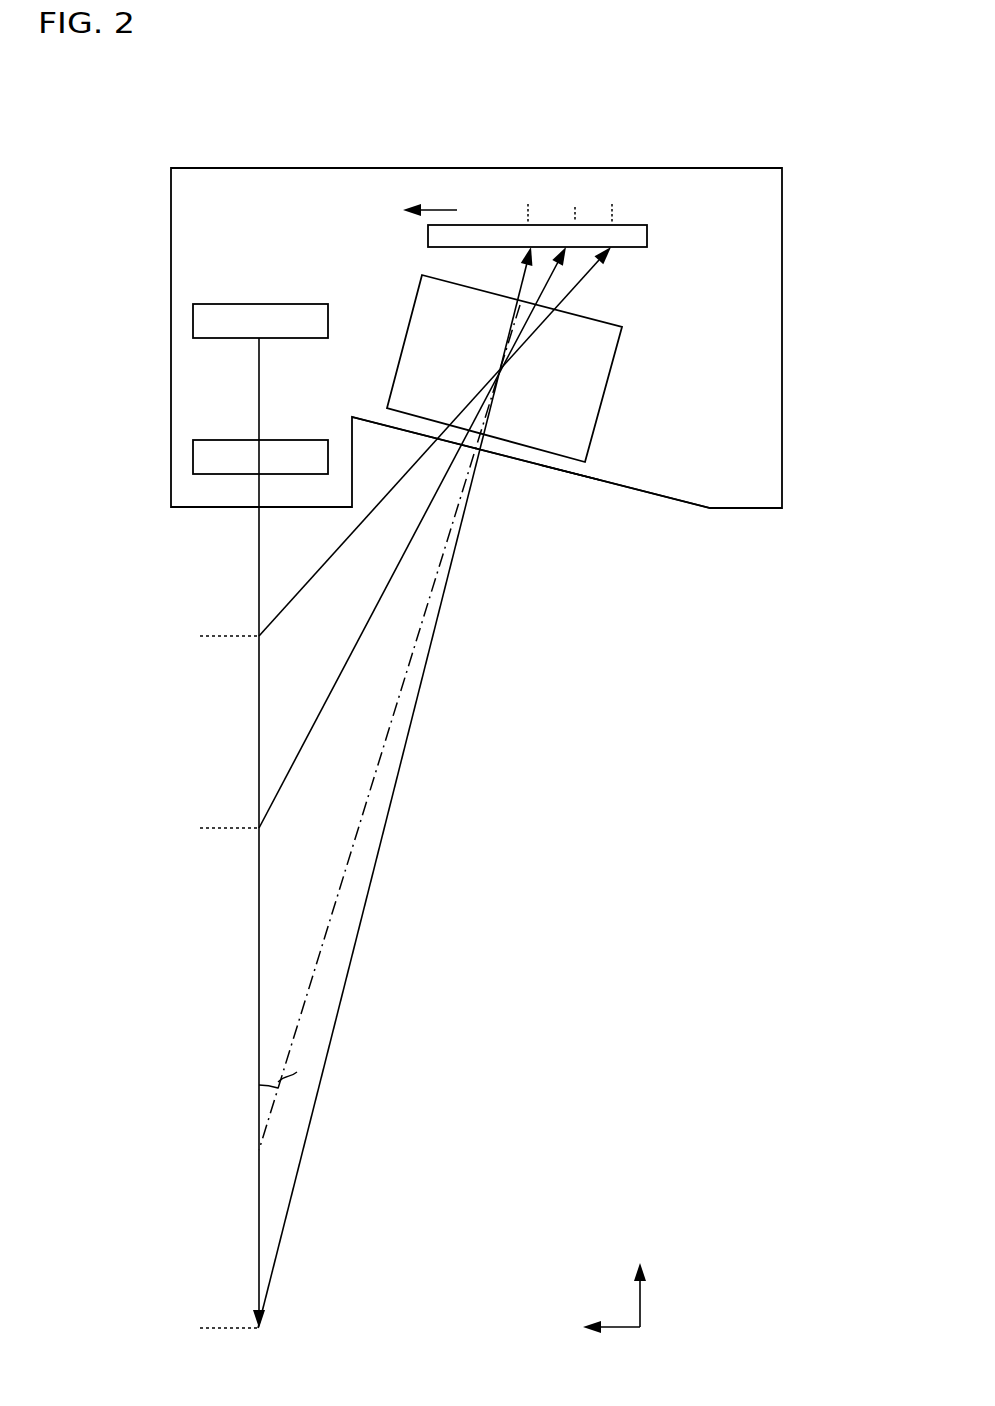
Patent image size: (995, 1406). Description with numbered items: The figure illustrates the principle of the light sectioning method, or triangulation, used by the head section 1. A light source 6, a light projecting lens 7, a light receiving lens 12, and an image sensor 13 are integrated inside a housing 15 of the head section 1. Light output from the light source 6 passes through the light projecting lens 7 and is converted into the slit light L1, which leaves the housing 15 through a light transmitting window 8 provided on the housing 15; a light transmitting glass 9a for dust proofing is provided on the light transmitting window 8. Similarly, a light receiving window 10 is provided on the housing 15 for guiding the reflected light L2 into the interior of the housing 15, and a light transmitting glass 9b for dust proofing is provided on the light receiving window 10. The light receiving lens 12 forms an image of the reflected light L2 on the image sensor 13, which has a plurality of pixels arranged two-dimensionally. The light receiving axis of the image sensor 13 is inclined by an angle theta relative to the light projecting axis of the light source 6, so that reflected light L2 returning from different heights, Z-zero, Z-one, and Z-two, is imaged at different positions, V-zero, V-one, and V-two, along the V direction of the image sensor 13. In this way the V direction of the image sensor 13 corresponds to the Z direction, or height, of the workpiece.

The head section 1 is at (660, 127).
The light source 6 is at (192, 323).
The light projecting lens 7 is at (192, 457).
The light transmitting window 8 is at (200, 508).
The light transmitting glass 9a is at (213, 508).
The light transmitting glass 9b is at (620, 483).
The light receiving window 10 is at (573, 473).
The light receiving lens 12 is at (597, 378).
The image sensor 13 is at (640, 232).
The housing 15 is at (170, 225).
The slit light L1 is at (259, 527).
The reflected light L2 is at (413, 717).